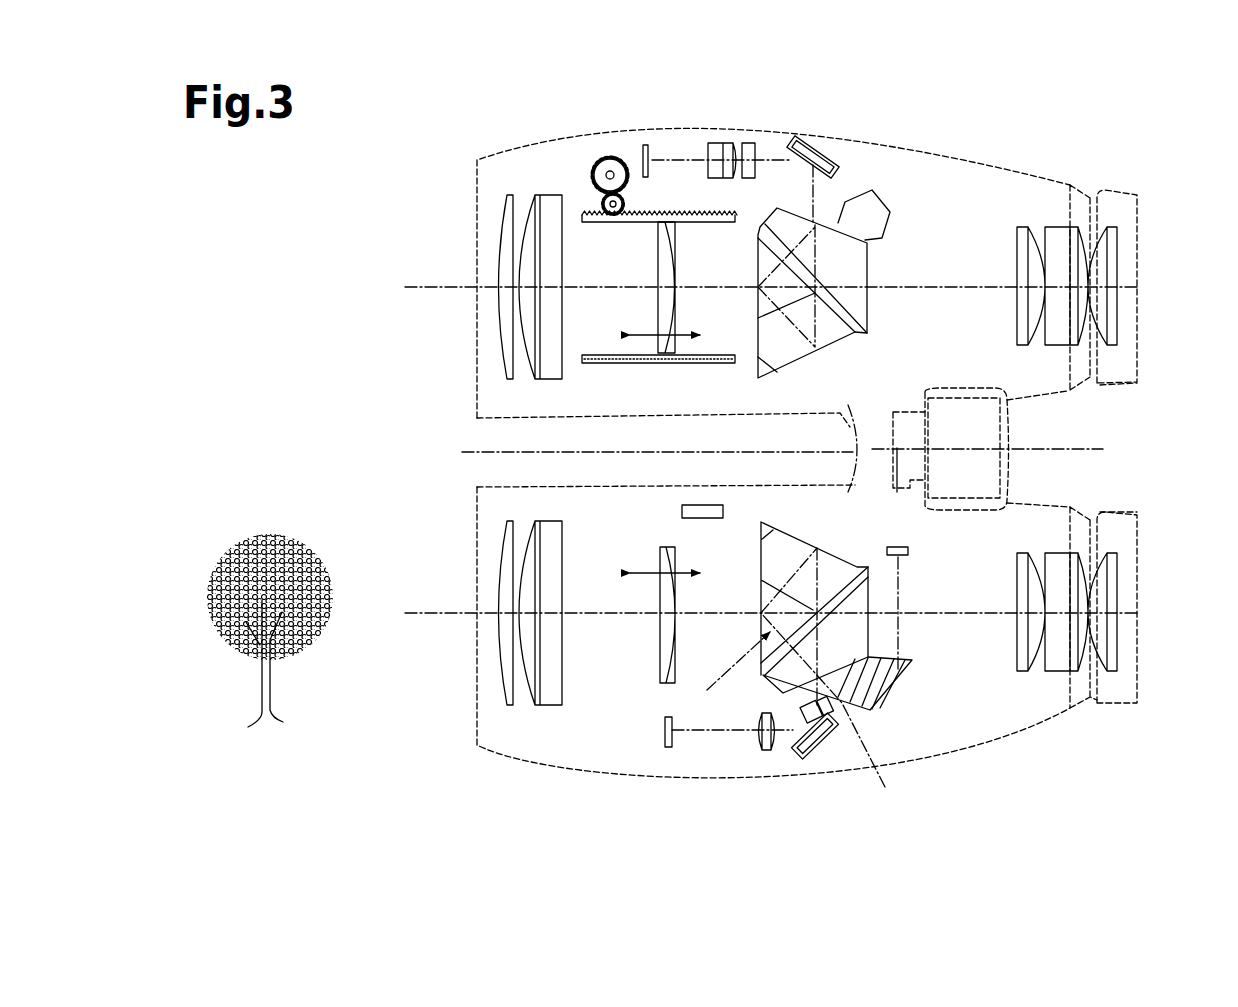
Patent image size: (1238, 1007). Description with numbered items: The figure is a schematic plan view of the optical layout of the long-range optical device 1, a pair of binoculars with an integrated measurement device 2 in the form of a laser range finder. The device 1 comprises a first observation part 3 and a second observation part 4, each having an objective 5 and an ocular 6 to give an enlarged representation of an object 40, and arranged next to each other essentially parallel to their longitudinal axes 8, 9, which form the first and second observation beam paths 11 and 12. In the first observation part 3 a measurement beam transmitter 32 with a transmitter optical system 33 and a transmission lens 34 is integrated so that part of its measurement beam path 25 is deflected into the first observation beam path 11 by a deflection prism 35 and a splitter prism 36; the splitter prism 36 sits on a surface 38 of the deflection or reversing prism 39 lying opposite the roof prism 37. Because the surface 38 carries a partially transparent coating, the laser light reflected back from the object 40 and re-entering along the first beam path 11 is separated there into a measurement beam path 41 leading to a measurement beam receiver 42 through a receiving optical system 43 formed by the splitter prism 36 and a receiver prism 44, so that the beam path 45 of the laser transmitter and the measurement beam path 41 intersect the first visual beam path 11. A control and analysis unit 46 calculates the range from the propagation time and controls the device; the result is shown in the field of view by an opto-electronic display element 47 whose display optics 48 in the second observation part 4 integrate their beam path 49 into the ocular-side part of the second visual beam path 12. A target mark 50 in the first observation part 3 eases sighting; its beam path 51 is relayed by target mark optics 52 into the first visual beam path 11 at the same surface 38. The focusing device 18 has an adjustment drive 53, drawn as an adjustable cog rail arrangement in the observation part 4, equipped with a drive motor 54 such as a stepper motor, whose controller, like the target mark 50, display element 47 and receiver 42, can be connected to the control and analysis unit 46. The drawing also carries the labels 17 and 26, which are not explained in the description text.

The long-range optical device 1 is at (433, 766).
The measurement device 2 is at (944, 731).
The first observation part 3 is at (975, 757).
The second observation part 4 is at (985, 147).
The objective 5 is at (468, 252).
The ocular 6 is at (1102, 393).
The longitudinal axis 8 is at (430, 290).
The longitudinal axis 9 is at (428, 618).
The first observation beam path 11 is at (988, 618).
The second observation beam path 12 is at (987, 285).
The focusing drive 17 is at (608, 200).
The focusing device 18 is at (640, 248).
The measurement beam path 25 is at (723, 672).
The detector 26 is at (800, 752).
The measurement beam transmitter 32 is at (836, 748).
The transmitter optical system 33 is at (905, 745).
The transmission lens 34 is at (867, 712).
The deflection prism 35 is at (900, 706).
The splitter prism 36 is at (851, 700).
The roof prism 37 is at (777, 557).
The surface 38 is at (784, 208).
The deflection prism 39 is at (860, 270).
The object 40 is at (260, 520).
The measurement beam path 41 is at (900, 590).
The measurement beam receiver 42 is at (878, 542).
The receiving optical system 43 is at (895, 670).
The receiver prism 44 is at (930, 677).
The beam path 45 is at (831, 710).
The control and analysis unit 46 is at (682, 510).
The opto-electronic display element 47 is at (643, 141).
The display optics 48 is at (782, 147).
The beam path 49 is at (772, 158).
The target mark 50 is at (666, 740).
The beam path 51 is at (698, 735).
The target mark optics 52 is at (770, 758).
The adjustment drive 53 is at (582, 205).
The drive motor 54 is at (598, 152).